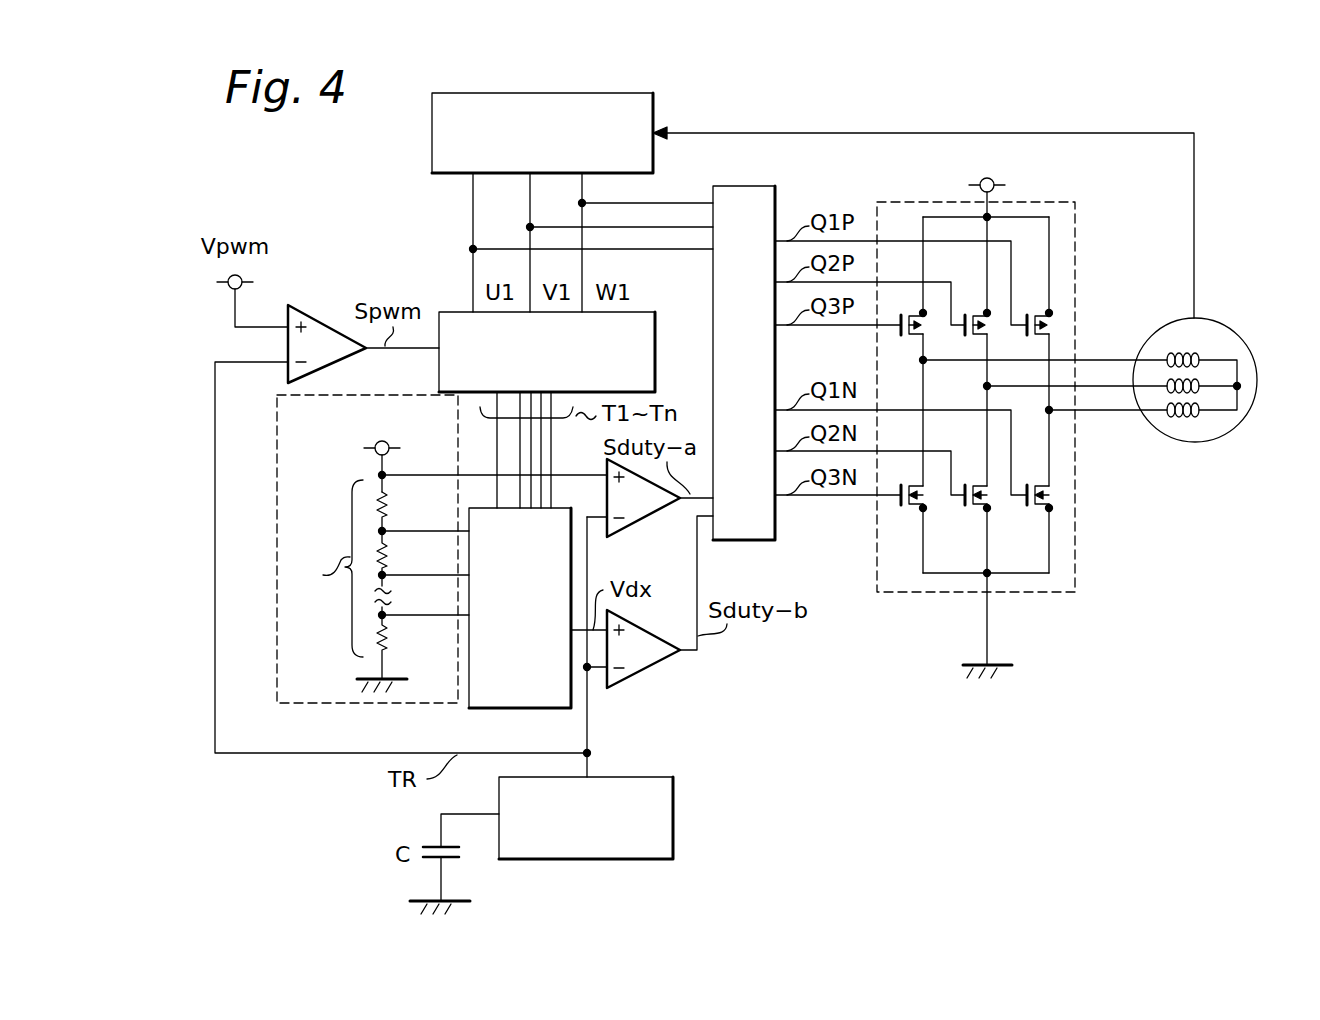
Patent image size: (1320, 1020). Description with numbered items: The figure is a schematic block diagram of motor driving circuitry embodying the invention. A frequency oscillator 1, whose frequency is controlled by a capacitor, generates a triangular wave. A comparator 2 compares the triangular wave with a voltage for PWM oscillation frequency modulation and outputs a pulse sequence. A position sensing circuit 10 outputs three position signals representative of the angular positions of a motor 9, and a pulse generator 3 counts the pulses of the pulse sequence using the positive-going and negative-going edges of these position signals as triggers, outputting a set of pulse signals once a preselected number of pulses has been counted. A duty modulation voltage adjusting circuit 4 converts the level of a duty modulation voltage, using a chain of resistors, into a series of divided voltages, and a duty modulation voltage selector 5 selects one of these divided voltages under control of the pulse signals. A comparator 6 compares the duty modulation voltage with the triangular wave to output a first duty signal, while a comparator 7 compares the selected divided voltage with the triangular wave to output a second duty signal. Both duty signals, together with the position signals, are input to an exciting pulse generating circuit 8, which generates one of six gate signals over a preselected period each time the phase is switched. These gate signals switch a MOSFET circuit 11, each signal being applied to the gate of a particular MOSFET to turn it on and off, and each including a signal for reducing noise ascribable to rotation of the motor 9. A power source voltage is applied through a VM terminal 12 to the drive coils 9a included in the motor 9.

The frequency oscillator 1 is at (675, 820).
The comparator 2 is at (313, 317).
The pulse generator 3 is at (657, 346).
The duty modulation voltage adjusting circuit 4 is at (277, 483).
The duty modulation voltage selector 5 is at (528, 709).
The comparator 6 is at (627, 530).
The comparator 7 is at (643, 670).
The exciting pulse generating circuit 8 is at (777, 196).
The motor 9 is at (1249, 336).
The drive coils 9a is at (1185, 348).
The position sensing circuit 10 is at (655, 118).
The MOSFET circuit 11 is at (1055, 593).
The VM terminal 12 is at (995, 183).